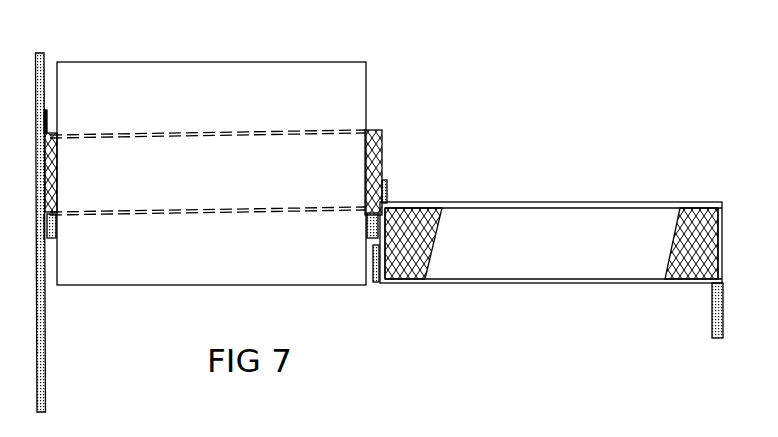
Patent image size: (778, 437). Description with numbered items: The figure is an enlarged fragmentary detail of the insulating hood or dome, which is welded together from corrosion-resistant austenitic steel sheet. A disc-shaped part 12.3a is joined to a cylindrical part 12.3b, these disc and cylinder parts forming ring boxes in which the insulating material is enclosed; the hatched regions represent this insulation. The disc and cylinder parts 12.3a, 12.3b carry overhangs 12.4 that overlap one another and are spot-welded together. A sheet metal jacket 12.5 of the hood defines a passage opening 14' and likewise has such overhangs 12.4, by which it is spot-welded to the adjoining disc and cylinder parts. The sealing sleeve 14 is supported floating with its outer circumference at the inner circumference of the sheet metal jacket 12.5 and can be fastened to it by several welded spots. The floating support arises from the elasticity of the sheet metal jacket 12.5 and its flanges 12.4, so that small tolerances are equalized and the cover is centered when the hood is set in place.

The sealing sleeve 14 is at (208, 152).
The passage opening 14' is at (336, 121).
The sheet metal jacket 12.5 is at (383, 163).
The overhangs 12.4 is at (366, 214).
The disc-shaped parts 12.3a is at (513, 284).
The cylindrical parts 12.3b is at (725, 222).